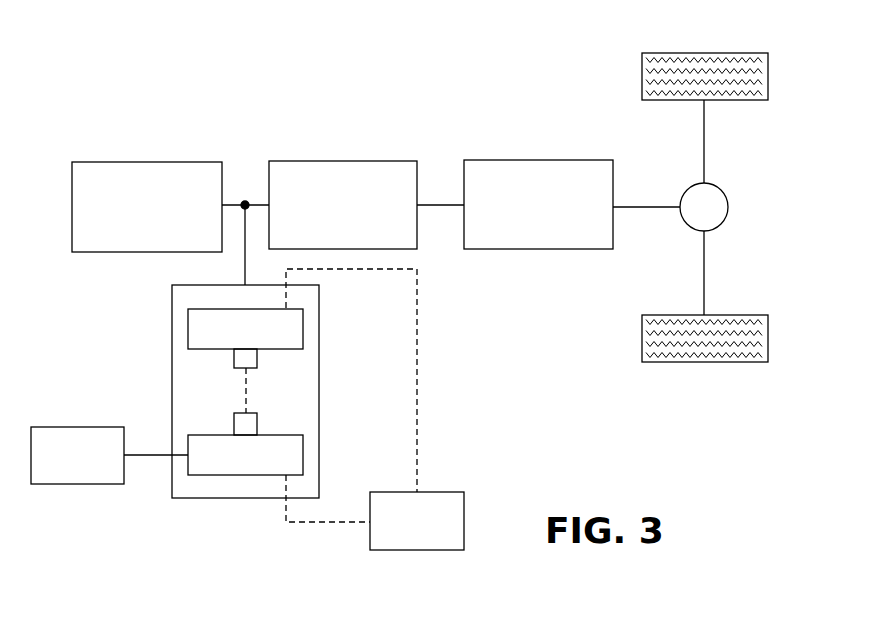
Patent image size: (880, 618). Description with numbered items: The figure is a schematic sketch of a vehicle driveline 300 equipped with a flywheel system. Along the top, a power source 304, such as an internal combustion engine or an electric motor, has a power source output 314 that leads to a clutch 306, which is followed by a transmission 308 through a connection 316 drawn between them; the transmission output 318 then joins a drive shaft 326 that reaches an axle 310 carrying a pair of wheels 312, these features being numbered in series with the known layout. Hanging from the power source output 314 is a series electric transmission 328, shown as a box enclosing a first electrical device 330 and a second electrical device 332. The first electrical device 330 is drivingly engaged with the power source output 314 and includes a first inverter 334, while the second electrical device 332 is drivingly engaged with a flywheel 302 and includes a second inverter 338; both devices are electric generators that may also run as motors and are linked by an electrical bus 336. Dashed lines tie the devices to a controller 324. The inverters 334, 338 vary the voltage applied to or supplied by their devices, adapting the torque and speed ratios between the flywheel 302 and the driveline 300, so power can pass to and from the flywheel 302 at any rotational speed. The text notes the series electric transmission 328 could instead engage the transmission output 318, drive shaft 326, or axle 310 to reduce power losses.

The vehicle driveline 300 is at (142, 120).
The flywheel 302 is at (78, 486).
The power source 304 is at (186, 160).
The clutch 306 is at (340, 160).
The transmission 308 is at (536, 159).
The axle 310 is at (705, 280).
The wheels 312 is at (700, 52).
The power source output 314 is at (232, 202).
The transmission output shaft 316 is at (437, 202).
The transmission output 318 is at (636, 209).
The controller 324 is at (449, 491).
The drive shaft 326 is at (655, 205).
The series electric transmission 328 is at (215, 499).
The first electrical device 330 is at (303, 323).
The second electrical device 332 is at (303, 455).
The first inverter 334 is at (257, 358).
The electrical bus 336 is at (246, 388).
The second inverter 338 is at (257, 423).